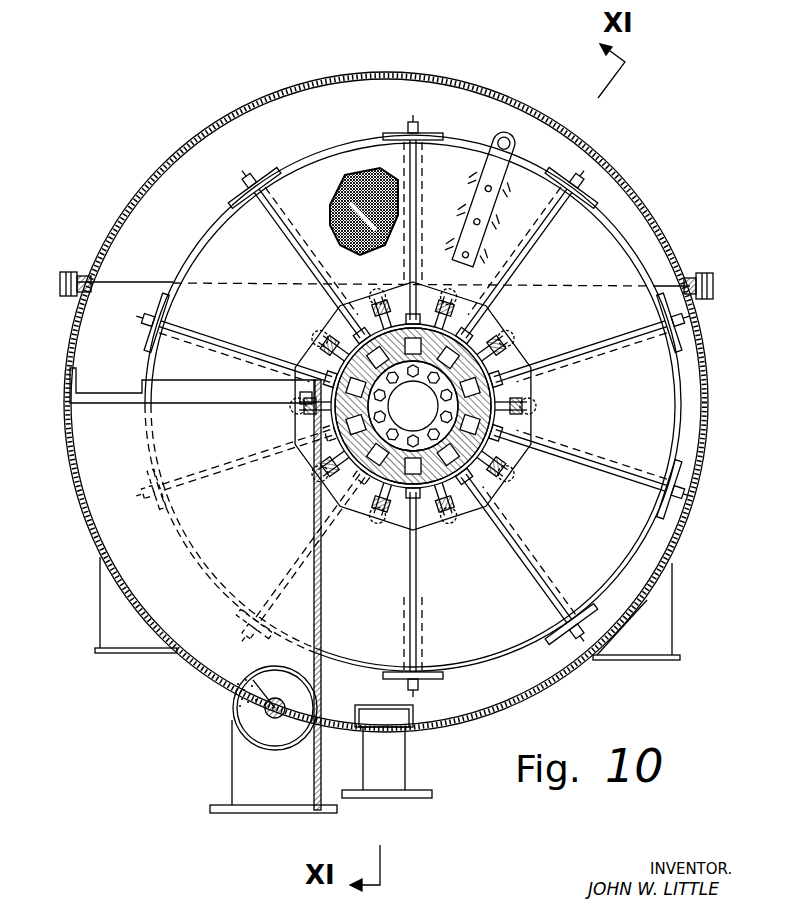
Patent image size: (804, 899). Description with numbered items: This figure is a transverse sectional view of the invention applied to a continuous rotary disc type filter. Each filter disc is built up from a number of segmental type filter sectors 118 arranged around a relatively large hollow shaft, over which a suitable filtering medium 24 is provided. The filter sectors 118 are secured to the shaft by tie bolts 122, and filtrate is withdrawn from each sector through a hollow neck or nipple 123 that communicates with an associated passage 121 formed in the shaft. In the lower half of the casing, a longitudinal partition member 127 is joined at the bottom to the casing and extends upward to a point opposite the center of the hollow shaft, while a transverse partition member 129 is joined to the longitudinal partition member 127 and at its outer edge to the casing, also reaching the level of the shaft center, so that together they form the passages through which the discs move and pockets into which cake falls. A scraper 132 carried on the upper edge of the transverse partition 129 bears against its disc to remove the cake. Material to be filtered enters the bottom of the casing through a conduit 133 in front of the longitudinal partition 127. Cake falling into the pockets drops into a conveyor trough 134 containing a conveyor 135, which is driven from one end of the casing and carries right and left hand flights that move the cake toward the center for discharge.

The segmental type filter sector 118 is at (317, 182).
The passage 121 is at (519, 341).
The tie bolt 122 is at (240, 171).
The hollow neck or nipple 123 is at (375, 303).
The filtering medium 24 is at (372, 152).
The longitudinal partition member 127 is at (322, 612).
The transverse partition member 129 is at (240, 536).
The scraper 132 is at (196, 390).
The conduit 133 is at (398, 766).
The conveyor trough 134 is at (243, 718).
The conveyor 135 is at (273, 682).